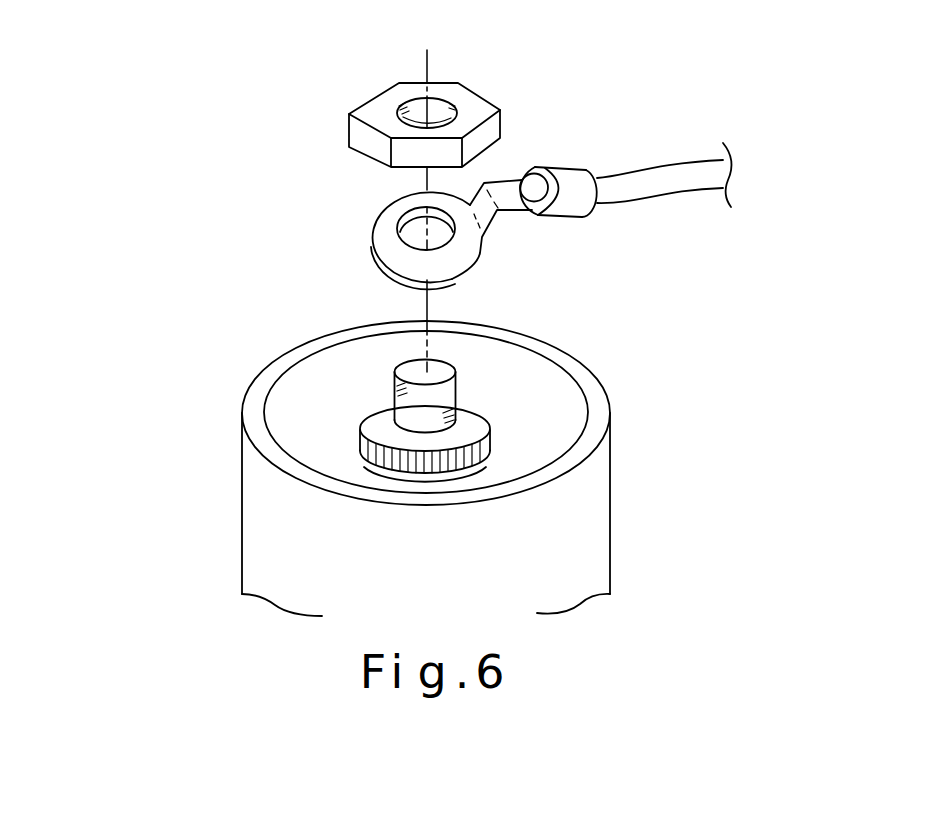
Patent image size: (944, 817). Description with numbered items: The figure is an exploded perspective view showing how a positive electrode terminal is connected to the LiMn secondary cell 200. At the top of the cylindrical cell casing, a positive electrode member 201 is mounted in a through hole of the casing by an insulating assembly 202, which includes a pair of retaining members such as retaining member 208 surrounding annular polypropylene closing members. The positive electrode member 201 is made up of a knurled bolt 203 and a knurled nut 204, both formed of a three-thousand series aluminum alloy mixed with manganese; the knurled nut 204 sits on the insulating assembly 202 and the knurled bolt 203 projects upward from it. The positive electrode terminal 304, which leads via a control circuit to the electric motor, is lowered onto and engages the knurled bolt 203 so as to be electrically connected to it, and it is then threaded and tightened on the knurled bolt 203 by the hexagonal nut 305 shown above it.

The LiMn secondary cell 200 is at (660, 373).
The positive electrode member 201 is at (182, 260).
The insulating assembly 202 is at (362, 463).
The retaining member 208 is at (339, 412).
The knurled bolt 203 is at (400, 390).
The knurled nut 204 is at (373, 424).
The positive electrode terminal 304 is at (575, 172).
The hexagonal nut 305 is at (473, 93).